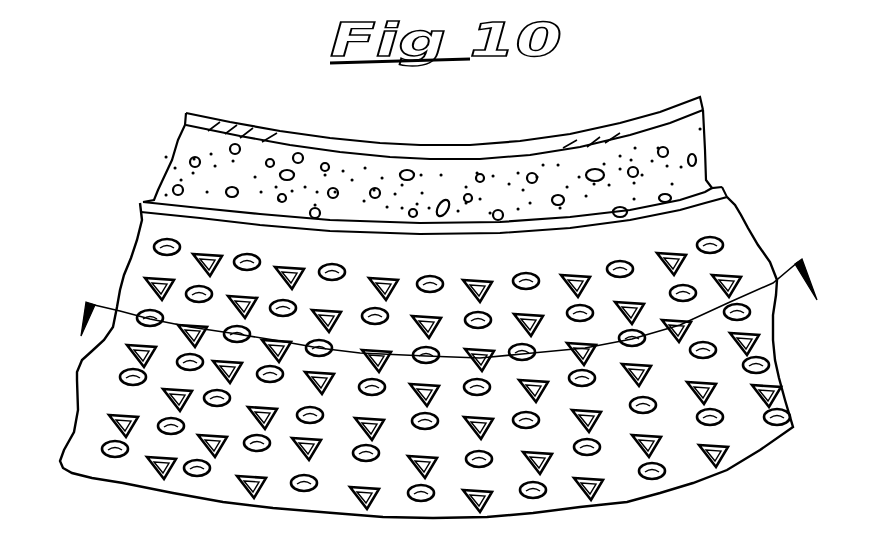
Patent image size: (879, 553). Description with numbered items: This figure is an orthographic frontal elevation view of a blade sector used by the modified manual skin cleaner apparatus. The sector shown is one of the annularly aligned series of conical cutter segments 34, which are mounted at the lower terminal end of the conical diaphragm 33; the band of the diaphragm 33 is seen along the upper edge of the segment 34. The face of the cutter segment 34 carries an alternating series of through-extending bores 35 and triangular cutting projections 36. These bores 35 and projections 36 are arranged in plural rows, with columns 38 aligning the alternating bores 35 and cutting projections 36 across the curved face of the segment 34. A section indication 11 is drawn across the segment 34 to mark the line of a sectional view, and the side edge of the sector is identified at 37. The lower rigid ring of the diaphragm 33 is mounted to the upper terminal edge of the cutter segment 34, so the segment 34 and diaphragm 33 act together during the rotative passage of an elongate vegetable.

The section line 11- 11 is at (33, 341).
The conical diaphragm 33 is at (560, 170).
The conical cutter segment 34 is at (750, 223).
The through-extending bore 35 is at (180, 246).
The triangular cutting projection 36 is at (216, 258).
The liner side edge 37 is at (133, 285).
The column 38 is at (344, 263).